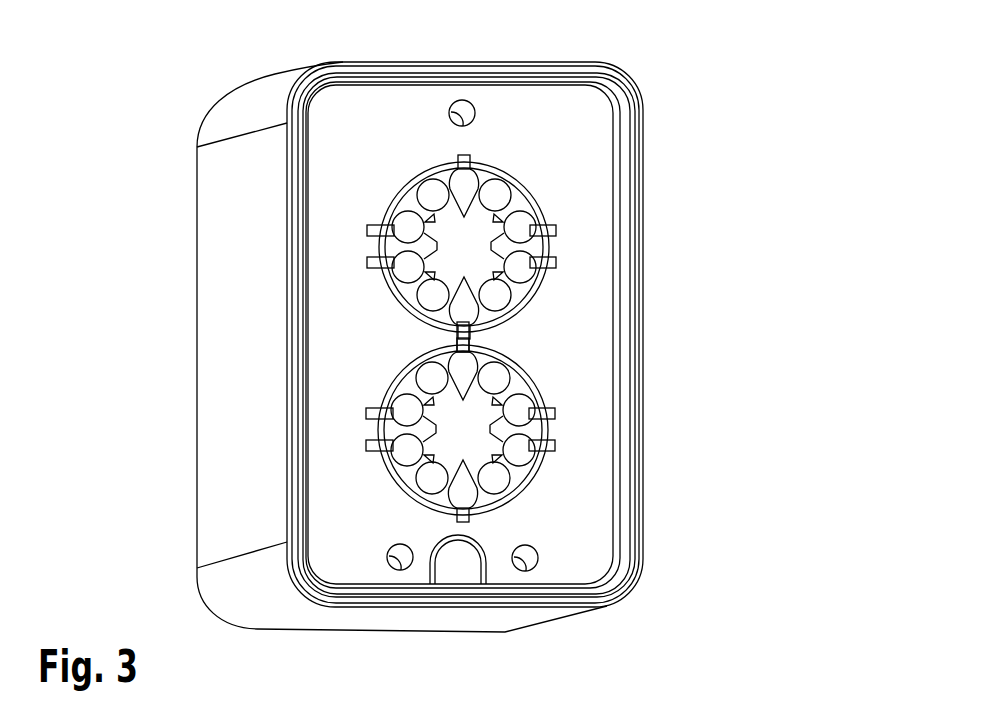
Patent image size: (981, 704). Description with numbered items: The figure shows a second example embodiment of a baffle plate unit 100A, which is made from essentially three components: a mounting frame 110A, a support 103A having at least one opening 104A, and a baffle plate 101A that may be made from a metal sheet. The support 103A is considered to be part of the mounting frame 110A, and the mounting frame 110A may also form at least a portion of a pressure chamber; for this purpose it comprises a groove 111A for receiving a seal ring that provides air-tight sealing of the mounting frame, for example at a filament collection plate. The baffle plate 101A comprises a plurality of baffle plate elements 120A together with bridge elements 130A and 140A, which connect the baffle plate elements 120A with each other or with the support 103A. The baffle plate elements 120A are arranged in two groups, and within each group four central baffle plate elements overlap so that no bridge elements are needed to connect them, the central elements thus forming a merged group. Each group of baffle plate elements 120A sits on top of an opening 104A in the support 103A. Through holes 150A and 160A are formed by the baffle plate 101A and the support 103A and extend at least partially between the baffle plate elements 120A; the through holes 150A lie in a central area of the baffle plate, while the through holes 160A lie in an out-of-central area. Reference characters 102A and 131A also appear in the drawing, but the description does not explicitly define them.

The baffle plate unit 100A is at (672, 116).
The baffle plate 101A is at (523, 370).
The contact insert 102A is at (472, 240).
The support 103A is at (577, 520).
The opening 104A is at (522, 203).
The mounting frame 110A is at (217, 255).
The groove 111A is at (630, 567).
The baffle plate elements 120A is at (450, 226).
The bridge elements 130A is at (420, 210).
The connecting bridge 131A is at (455, 344).
The bridge elements 140A is at (540, 228).
The through holes 150A is at (502, 388).
The through holes 160A is at (430, 188).